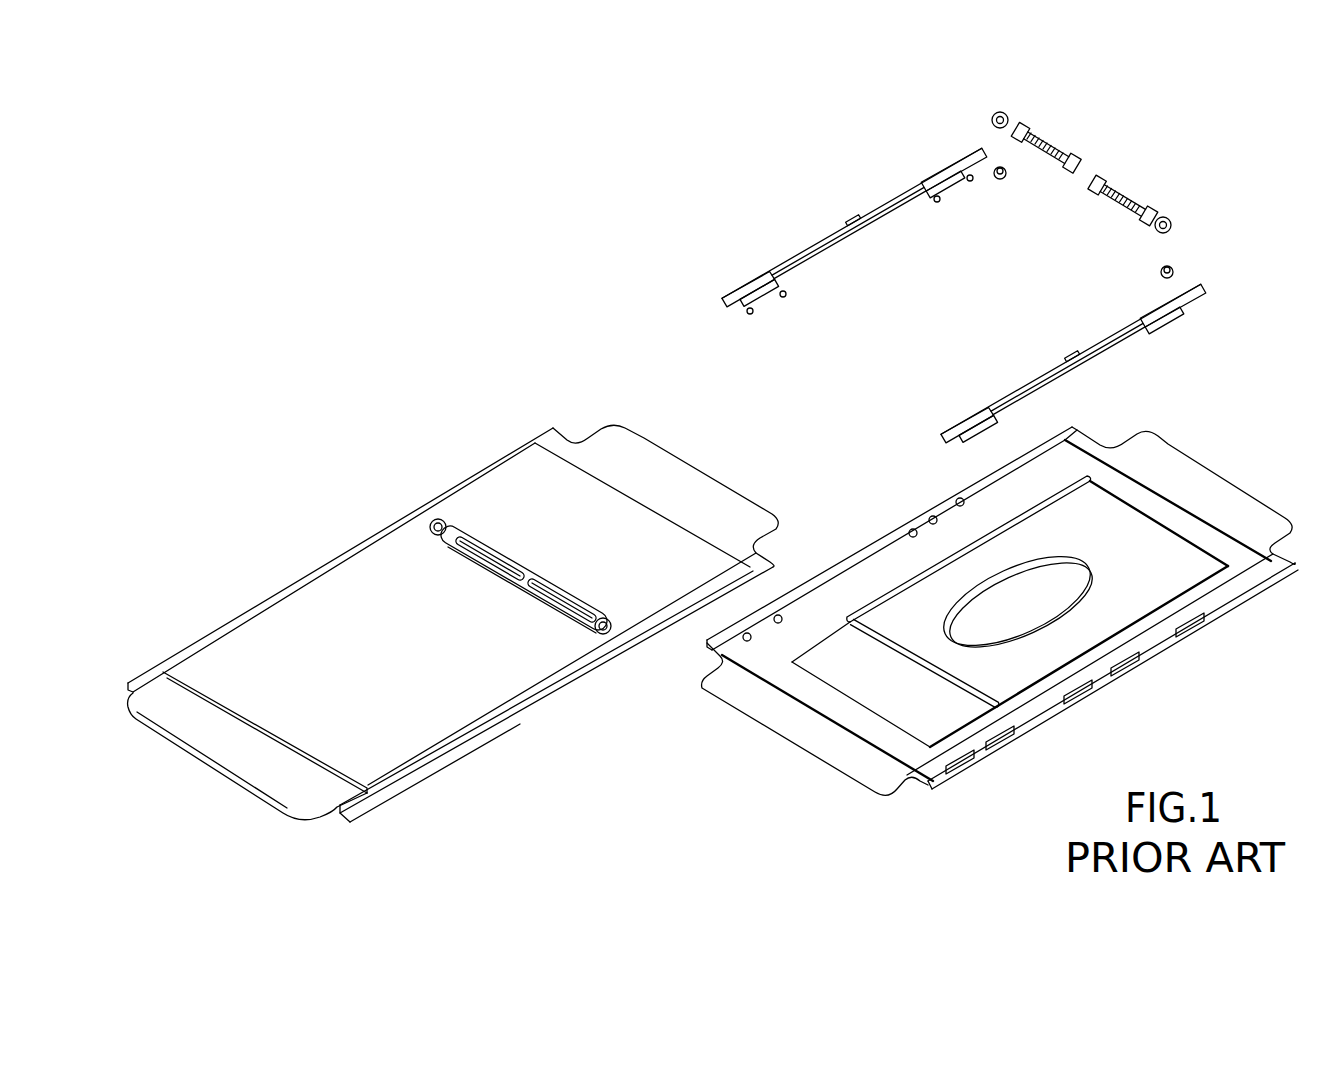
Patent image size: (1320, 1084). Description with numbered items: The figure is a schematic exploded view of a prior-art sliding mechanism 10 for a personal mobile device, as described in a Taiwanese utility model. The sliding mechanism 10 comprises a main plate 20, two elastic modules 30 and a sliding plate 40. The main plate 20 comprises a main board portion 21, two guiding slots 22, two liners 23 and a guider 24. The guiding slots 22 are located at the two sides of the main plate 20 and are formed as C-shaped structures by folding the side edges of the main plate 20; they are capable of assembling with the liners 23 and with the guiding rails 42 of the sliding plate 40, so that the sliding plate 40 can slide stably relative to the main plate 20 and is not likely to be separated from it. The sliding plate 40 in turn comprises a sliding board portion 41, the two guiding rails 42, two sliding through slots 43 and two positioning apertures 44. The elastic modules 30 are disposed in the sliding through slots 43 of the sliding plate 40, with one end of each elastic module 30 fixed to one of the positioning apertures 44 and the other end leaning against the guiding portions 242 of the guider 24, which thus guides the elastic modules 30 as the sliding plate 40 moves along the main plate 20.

The sliding mechanism 10 is at (556, 226).
The main plate 20 is at (1172, 465).
The main board portion 21 is at (1233, 497).
The guiding slots 22 is at (916, 787).
The liners 23 is at (797, 254).
The guider 24 is at (1052, 588).
The guiding portions 242 is at (1013, 635).
The elastic modules 30 is at (1125, 185).
The sliding plate 40 is at (366, 532).
The sliding board portion 41 is at (484, 690).
The guiding rails 42 is at (252, 610).
The sliding through slots 43 is at (490, 546).
The positioning apertures 44 is at (433, 518).